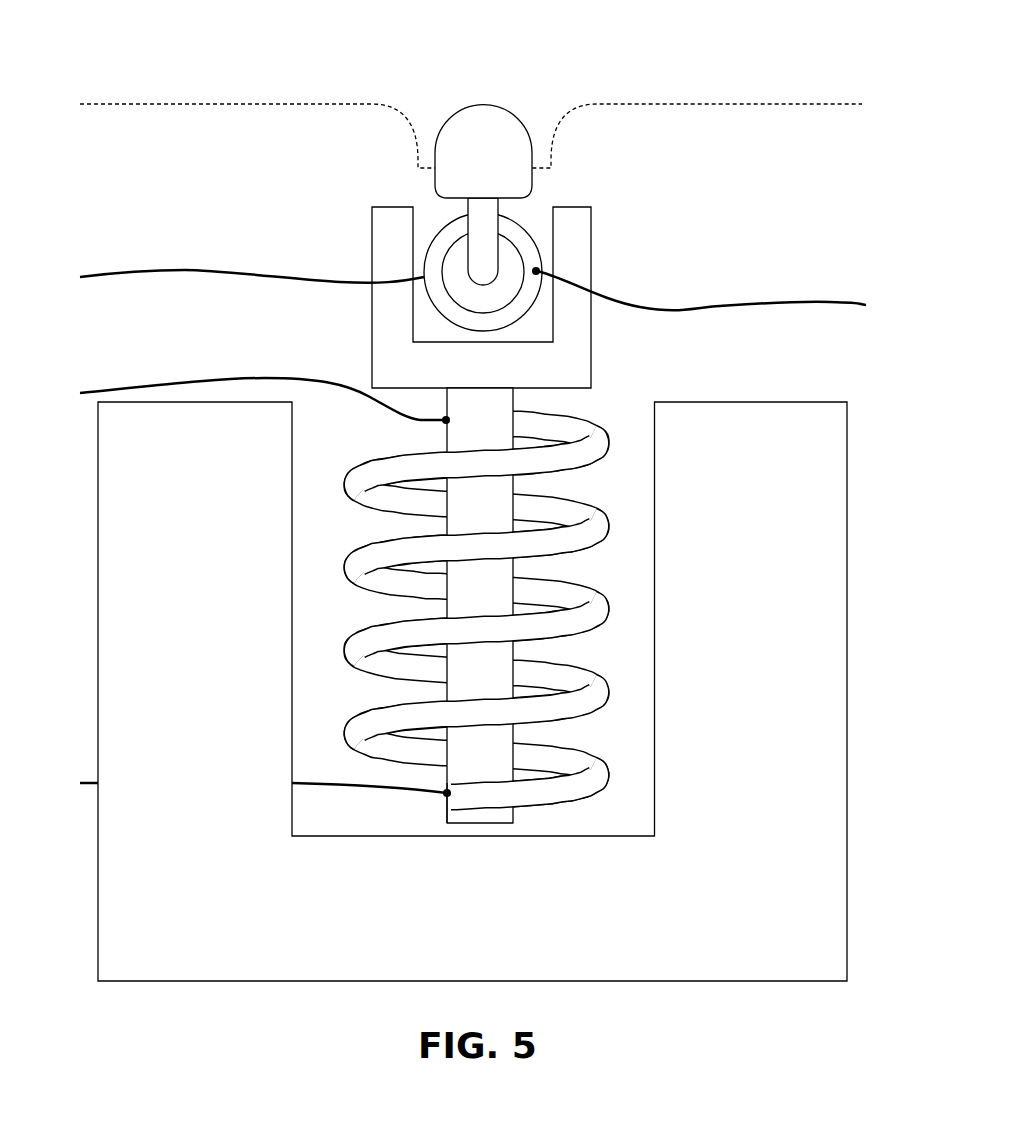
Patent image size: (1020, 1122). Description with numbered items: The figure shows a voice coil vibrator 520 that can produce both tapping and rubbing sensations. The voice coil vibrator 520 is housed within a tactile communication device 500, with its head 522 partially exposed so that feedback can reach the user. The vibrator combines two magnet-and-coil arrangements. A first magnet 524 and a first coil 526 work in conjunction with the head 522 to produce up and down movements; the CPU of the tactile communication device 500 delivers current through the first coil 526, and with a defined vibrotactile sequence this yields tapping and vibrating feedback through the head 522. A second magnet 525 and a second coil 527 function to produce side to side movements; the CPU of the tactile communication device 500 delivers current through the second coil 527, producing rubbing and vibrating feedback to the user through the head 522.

The tactile communication device 500 is at (686, 105).
The voice coil vibrator 520 is at (473, 519).
The head 522 is at (495, 105).
The first magnet 524 is at (185, 981).
The second magnet 525 is at (372, 240).
The first coil 526 is at (609, 692).
The second coil 527 is at (485, 332).